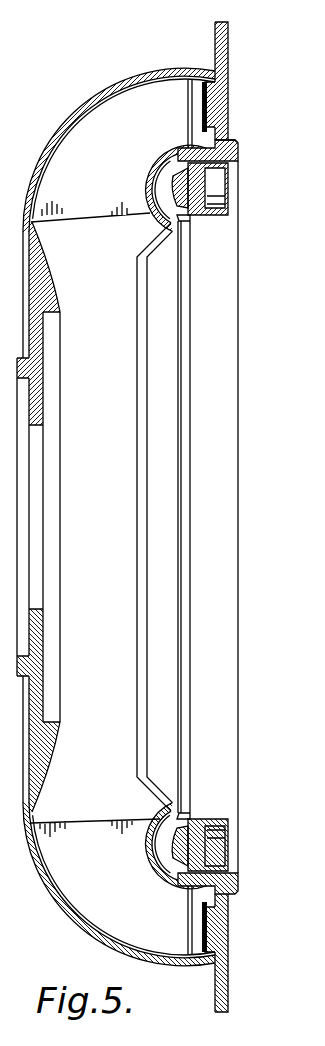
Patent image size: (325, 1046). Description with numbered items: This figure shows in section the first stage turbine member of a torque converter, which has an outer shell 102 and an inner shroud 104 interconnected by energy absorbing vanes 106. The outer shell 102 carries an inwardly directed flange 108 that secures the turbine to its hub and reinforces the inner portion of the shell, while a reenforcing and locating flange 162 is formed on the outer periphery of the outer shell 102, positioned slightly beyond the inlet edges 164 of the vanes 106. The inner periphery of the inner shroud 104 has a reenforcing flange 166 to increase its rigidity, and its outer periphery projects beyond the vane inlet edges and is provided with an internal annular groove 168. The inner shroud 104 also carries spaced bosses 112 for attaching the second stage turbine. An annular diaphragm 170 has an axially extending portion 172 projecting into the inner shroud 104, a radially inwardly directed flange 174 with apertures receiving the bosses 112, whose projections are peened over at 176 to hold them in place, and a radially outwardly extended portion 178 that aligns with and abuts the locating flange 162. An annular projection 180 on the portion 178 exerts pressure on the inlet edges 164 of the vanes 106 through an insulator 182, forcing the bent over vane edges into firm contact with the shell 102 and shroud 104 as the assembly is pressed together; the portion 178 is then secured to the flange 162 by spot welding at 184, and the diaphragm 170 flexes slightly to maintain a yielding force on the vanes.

The outer shell 102 is at (97, 96).
The inner shroud 104 is at (146, 190).
The energy absorbing vanes 106 is at (77, 208).
The inwardly directed flange 108 is at (37, 374).
The bosses 112 is at (210, 204).
The reenforcing and locating flange 162 is at (216, 34).
The inlet edges 164 is at (230, 84).
The reenforcing flange 166 is at (153, 247).
The internal annular groove 168 is at (230, 141).
The annular diaphragm 170 is at (226, 151).
The axially extending portion 172 is at (200, 166).
The radially inwardly directed flange 174 is at (187, 222).
The peened over projections 176 is at (160, 157).
The radially outwardly extended portion 178 is at (229, 66).
The annular projection 180 is at (229, 102).
The insulator 182 is at (202, 107).
The spot welding 184 is at (230, 42).